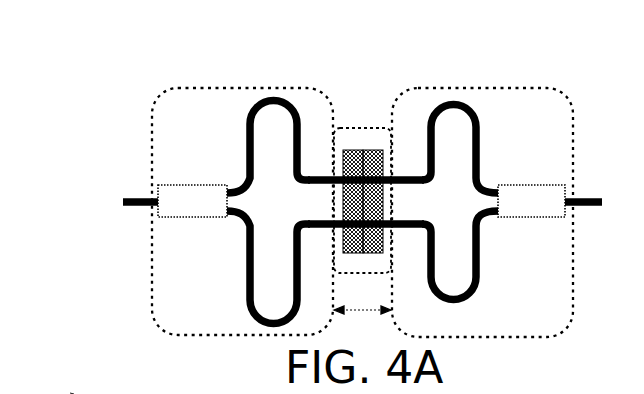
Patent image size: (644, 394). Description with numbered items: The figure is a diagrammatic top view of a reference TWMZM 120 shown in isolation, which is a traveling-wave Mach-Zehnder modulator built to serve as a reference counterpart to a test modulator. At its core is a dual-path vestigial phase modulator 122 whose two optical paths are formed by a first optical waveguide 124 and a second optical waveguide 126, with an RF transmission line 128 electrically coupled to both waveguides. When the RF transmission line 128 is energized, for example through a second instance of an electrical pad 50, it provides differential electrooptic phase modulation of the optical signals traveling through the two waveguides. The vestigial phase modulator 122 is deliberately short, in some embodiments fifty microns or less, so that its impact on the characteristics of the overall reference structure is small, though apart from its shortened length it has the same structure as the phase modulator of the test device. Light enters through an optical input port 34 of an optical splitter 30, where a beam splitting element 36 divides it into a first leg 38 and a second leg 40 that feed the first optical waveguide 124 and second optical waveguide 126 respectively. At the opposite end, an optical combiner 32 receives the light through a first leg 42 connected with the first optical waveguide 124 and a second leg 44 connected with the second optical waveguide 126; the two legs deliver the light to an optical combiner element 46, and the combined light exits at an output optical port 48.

The reference TWMZM 120 is at (132, 74).
The optical splitter 30 is at (222, 87).
The optical combiner 32 is at (505, 87).
The optical input port 34 is at (133, 197).
The beam splitting element 36 is at (195, 184).
The first leg 38 is at (273, 99).
The second leg 40 is at (245, 279).
The first leg 42 is at (452, 101).
The second leg 44 is at (481, 265).
The optical combiner element 46 is at (533, 184).
The output optical port 48 is at (590, 197).
The vestigial phase modulator 122 is at (362, 127).
The first optical waveguide 124 is at (344, 149).
The second optical waveguide 126 is at (381, 149).
The RF transmission line 128 is at (342, 240).
The electrical pad 50 is at (72, 393).